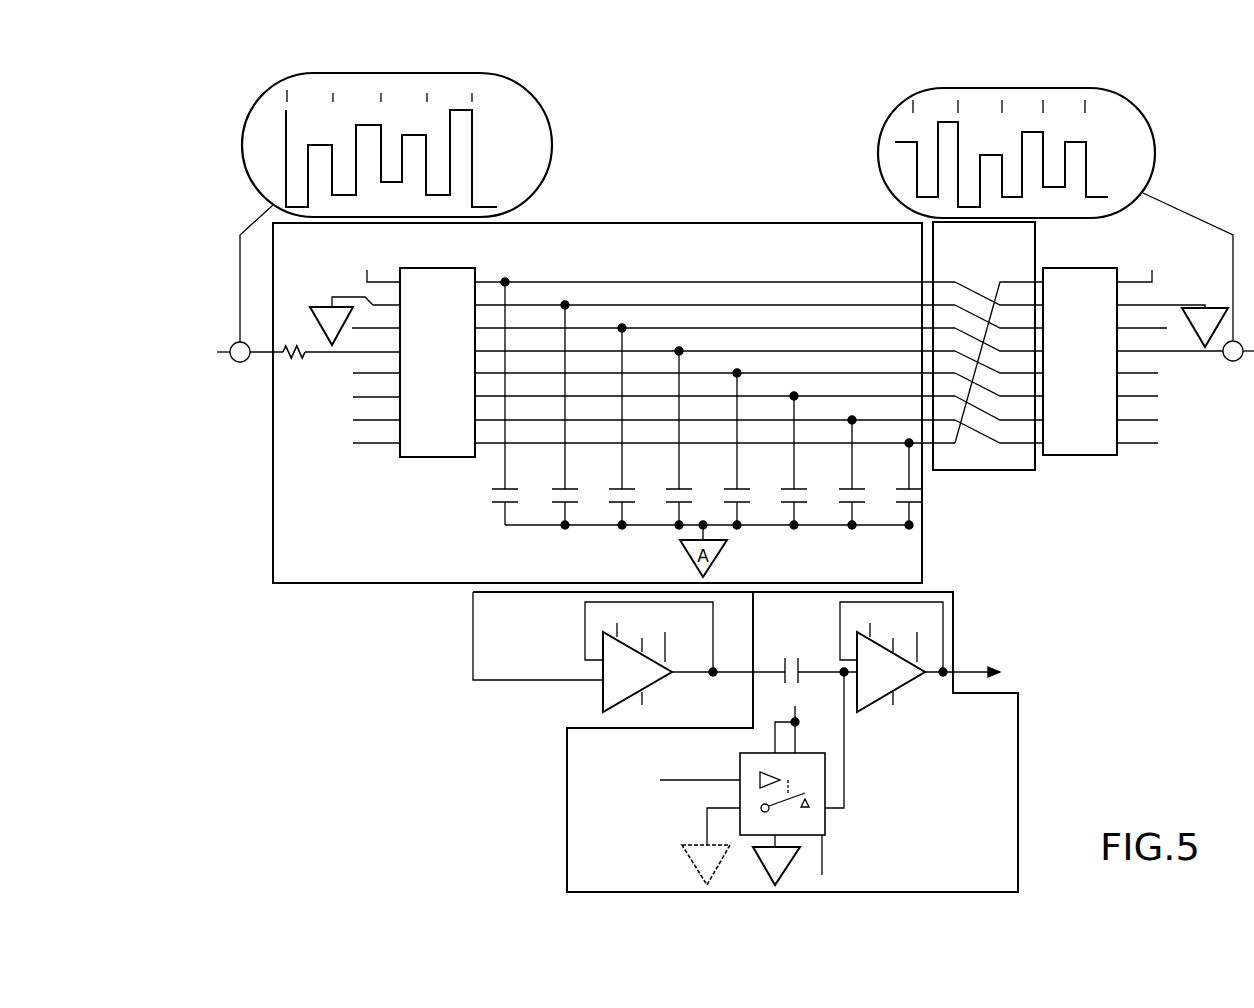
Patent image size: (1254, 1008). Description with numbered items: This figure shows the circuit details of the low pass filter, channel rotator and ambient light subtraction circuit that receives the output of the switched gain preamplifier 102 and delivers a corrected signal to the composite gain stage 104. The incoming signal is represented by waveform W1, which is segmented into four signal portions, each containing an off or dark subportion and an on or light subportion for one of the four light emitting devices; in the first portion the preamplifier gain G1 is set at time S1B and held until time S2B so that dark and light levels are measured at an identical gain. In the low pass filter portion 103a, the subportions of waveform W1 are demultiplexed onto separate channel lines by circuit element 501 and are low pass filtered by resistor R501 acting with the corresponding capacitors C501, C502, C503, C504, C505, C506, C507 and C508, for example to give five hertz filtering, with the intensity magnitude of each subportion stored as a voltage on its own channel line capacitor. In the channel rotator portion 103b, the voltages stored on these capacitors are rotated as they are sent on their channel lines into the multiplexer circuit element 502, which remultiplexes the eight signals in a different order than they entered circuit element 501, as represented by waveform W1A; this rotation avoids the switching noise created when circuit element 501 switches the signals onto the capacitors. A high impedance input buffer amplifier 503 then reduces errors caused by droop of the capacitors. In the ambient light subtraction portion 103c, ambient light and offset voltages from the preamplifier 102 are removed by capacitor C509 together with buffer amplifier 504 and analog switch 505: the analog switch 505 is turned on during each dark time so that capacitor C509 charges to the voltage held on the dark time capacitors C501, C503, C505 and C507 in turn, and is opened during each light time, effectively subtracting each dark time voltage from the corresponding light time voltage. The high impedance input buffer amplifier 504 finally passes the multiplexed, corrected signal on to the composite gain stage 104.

The switched gain preamplifier 102 is at (191, 351).
The low pass filter portion 103a is at (749, 251).
The channel rotator portion 103b is at (1003, 286).
The ambient light subtraction portion 103c is at (946, 810).
The composite gain stage 104 is at (1077, 672).
The circuit element 501 is at (420, 458).
The multiplexer circuit element 502 is at (1108, 456).
The high impedance input buffer amplifier 503 is at (640, 678).
The high impedance input buffer amplifier 504 is at (907, 677).
The analog switch 505 is at (755, 753).
The resistor R501 is at (325, 338).
The capacitor C501 is at (521, 401).
The capacitor C502 is at (581, 415).
The capacitor C503 is at (638, 426).
The capacitor C504 is at (695, 438).
The capacitor C505 is at (753, 449).
The capacitor C506 is at (810, 460).
The capacitor C507 is at (868, 472).
The capacitor C508 is at (892, 484).
The capacitor C509 is at (814, 657).
The waveform W1 is at (523, 90).
The waveform W1A is at (1137, 107).
The time S1B is at (285, 90).
The time S2B is at (333, 95).